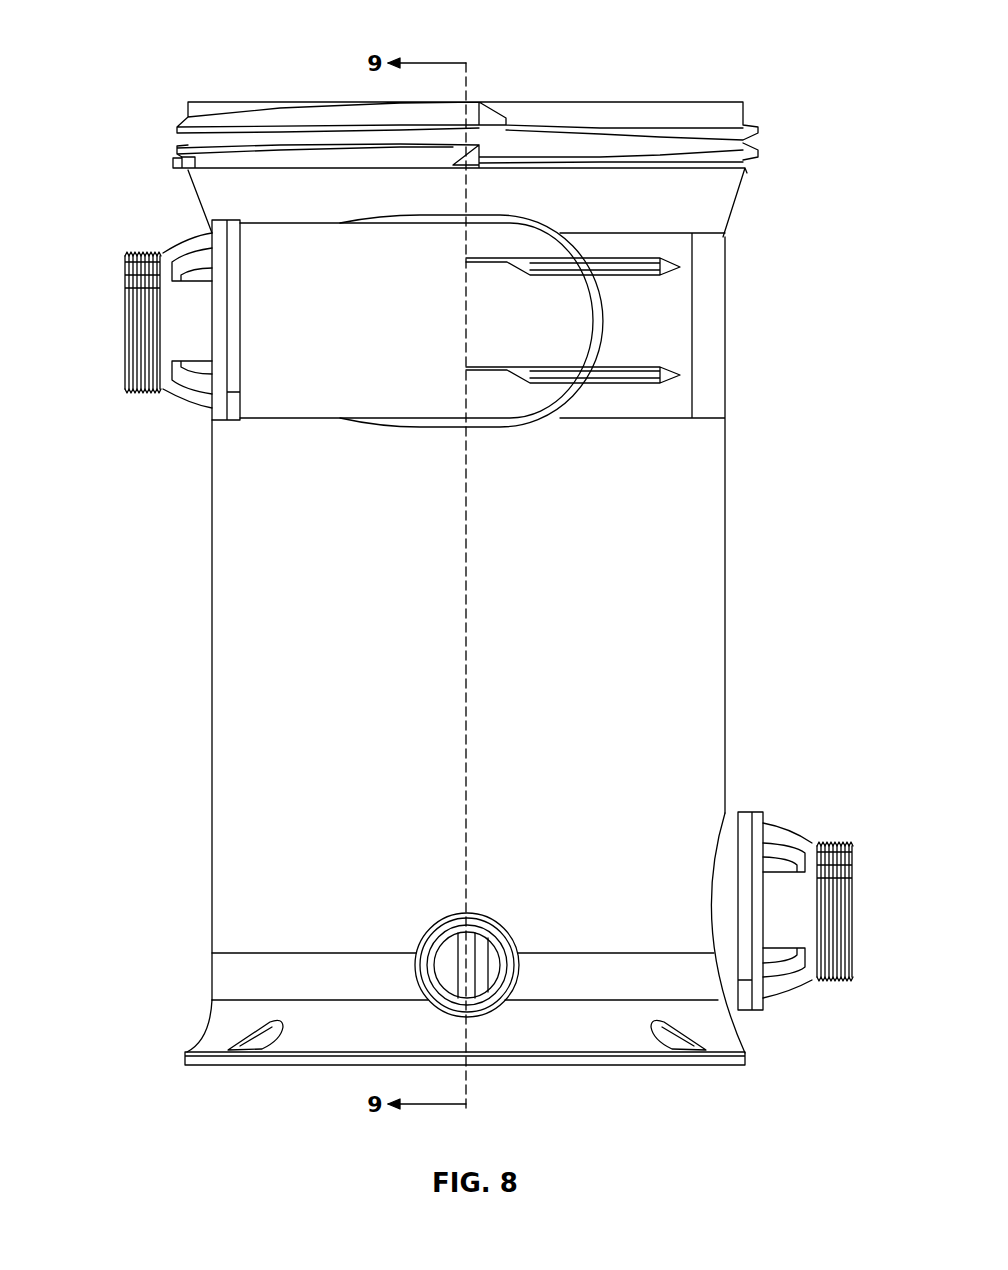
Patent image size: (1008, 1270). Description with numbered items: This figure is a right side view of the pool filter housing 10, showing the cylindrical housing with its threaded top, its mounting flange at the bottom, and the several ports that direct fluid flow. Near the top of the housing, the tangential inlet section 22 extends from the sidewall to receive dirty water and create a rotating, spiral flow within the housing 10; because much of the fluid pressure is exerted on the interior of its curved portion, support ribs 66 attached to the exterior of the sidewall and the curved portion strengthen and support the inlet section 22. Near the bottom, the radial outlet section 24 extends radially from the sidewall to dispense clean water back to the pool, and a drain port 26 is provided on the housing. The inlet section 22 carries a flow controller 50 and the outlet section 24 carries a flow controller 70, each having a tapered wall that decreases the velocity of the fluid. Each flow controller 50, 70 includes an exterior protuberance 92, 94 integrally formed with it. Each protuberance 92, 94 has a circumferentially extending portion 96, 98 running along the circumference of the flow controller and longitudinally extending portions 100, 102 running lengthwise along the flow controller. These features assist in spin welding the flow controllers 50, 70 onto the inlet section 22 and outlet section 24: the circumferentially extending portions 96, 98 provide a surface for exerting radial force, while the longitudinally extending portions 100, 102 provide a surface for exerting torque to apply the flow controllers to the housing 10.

The pool filter housing 10 is at (771, 55).
The tangential inlet section 22 is at (348, 353).
The radial outlet section 24 is at (756, 1008).
The drain port 26 is at (443, 915).
The flow controller 50 is at (185, 342).
The support ribs 66 is at (648, 365).
The flow controller 70 is at (779, 923).
The exterior protuberance 92 is at (218, 310).
The exterior protuberance 94 is at (766, 941).
The circumferentially extending portion 96 is at (208, 335).
The circumferentially extending portion 98 is at (752, 889).
The longitudinally extending portion 100 is at (190, 398).
The longitudinally extending portion 102 is at (788, 988).